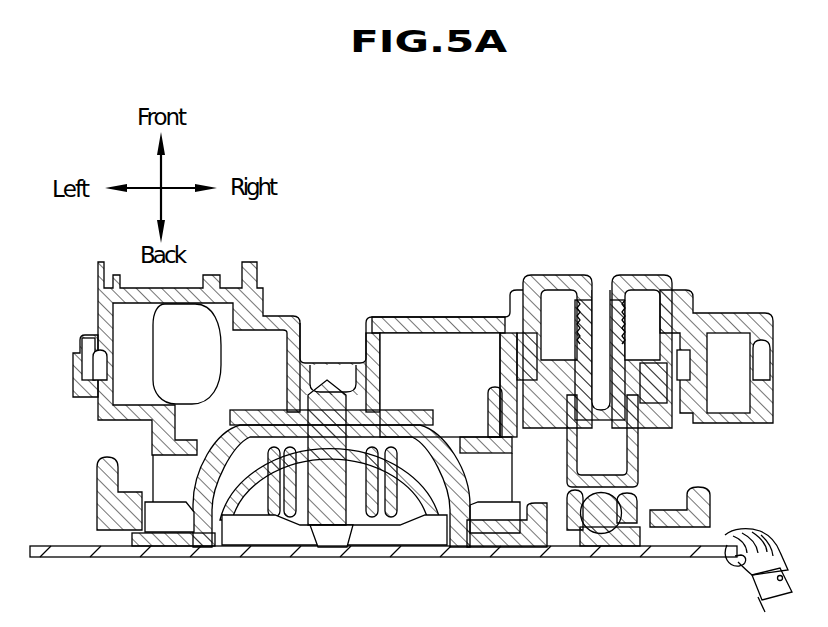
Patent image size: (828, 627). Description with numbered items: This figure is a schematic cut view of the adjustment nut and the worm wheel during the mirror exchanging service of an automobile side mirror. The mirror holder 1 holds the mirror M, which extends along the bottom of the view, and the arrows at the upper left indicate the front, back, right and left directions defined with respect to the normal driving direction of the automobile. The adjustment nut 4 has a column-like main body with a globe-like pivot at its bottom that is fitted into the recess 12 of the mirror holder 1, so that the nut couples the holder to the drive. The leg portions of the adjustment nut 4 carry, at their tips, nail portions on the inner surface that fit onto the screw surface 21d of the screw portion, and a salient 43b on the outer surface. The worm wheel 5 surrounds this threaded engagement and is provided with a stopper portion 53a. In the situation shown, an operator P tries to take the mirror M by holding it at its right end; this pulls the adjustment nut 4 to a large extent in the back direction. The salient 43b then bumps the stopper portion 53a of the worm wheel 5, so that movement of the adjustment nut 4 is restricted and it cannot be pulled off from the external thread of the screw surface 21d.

The mirror holder 1 is at (100, 500).
The worm wheel 5 is at (552, 315).
The screw surface 21d is at (640, 360).
The salient 43b is at (703, 375).
The stopper portion 53a is at (647, 410).
The adjustment nut 4 is at (645, 448).
The recess 12 is at (598, 552).
The mirror M is at (497, 555).
The operator P is at (772, 542).